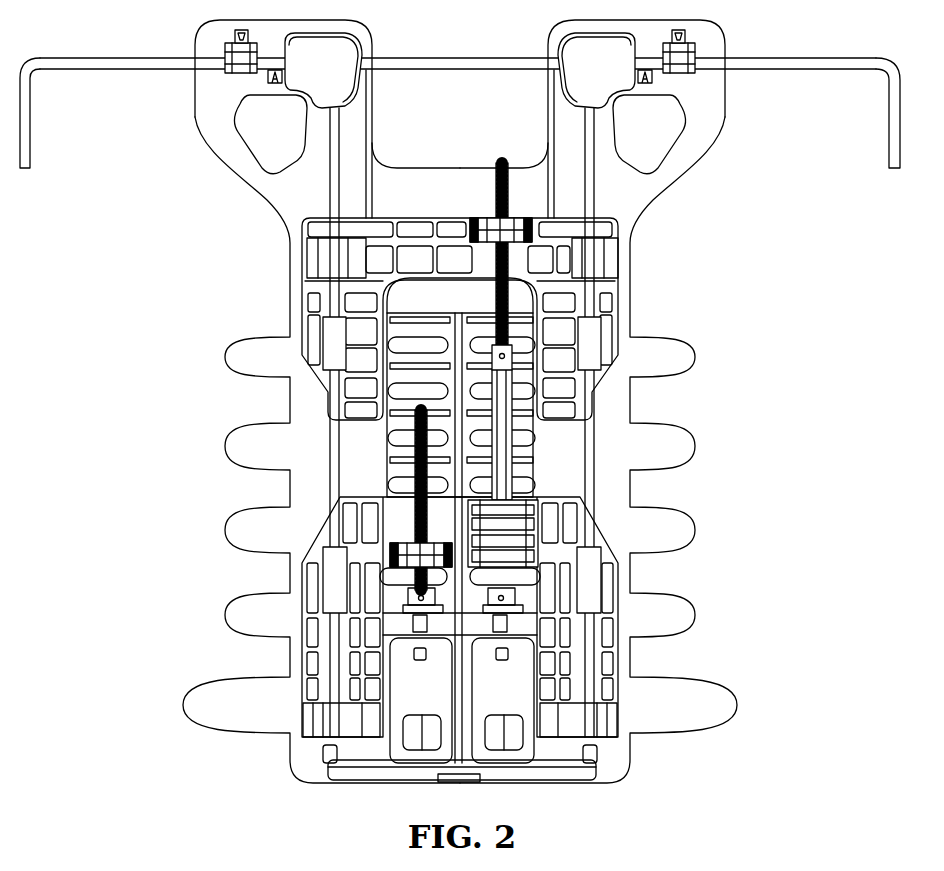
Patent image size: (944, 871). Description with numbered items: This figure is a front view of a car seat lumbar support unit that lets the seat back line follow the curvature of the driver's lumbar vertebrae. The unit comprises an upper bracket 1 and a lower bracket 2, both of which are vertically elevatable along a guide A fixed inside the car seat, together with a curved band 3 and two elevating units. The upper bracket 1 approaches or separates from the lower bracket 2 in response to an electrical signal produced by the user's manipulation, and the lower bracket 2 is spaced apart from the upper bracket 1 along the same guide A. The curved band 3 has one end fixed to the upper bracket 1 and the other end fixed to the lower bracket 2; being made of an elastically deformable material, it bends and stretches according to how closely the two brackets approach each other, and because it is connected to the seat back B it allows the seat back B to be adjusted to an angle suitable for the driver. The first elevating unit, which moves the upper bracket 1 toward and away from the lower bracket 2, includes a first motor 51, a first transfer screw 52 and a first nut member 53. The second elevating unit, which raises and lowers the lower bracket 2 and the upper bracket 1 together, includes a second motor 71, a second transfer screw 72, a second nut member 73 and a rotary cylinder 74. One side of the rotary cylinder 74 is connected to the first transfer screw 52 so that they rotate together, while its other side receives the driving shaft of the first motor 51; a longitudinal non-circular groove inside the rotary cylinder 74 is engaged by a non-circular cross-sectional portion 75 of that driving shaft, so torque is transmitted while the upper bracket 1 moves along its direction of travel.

The upper bracket 1 is at (638, 369).
The lower bracket 2 is at (632, 704).
The curved band 3 is at (325, 443).
The first motor 51 is at (535, 628).
The first transfer screw 52 is at (505, 310).
The first nut member 53 is at (530, 240).
The second motor 71 is at (393, 622).
The second transfer screw 72 is at (412, 462).
The second nut member 73 is at (395, 550).
The rotary cylinder 74 is at (505, 450).
The non-circular cross-sectional portion 75 is at (507, 573).
The guide A is at (335, 175).
The seat back B is at (706, 131).